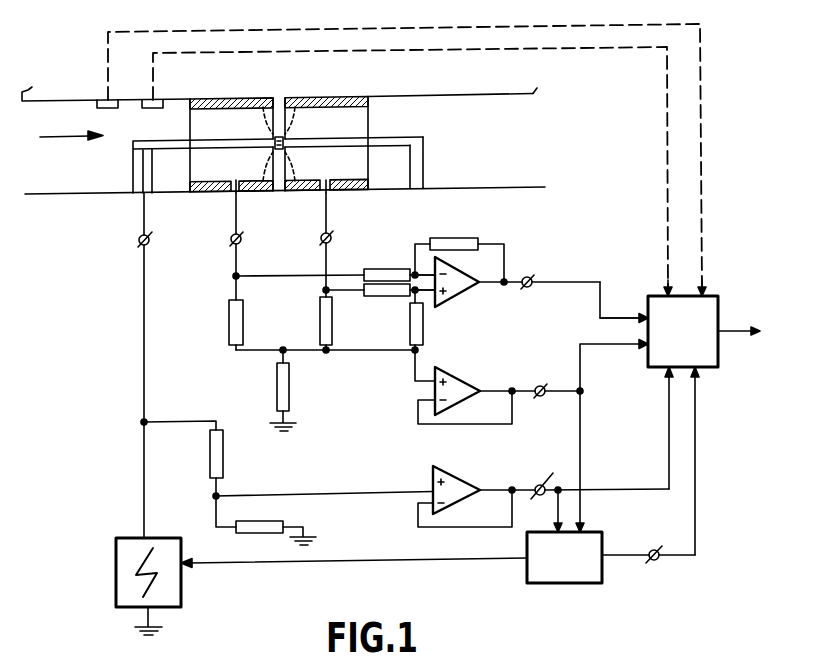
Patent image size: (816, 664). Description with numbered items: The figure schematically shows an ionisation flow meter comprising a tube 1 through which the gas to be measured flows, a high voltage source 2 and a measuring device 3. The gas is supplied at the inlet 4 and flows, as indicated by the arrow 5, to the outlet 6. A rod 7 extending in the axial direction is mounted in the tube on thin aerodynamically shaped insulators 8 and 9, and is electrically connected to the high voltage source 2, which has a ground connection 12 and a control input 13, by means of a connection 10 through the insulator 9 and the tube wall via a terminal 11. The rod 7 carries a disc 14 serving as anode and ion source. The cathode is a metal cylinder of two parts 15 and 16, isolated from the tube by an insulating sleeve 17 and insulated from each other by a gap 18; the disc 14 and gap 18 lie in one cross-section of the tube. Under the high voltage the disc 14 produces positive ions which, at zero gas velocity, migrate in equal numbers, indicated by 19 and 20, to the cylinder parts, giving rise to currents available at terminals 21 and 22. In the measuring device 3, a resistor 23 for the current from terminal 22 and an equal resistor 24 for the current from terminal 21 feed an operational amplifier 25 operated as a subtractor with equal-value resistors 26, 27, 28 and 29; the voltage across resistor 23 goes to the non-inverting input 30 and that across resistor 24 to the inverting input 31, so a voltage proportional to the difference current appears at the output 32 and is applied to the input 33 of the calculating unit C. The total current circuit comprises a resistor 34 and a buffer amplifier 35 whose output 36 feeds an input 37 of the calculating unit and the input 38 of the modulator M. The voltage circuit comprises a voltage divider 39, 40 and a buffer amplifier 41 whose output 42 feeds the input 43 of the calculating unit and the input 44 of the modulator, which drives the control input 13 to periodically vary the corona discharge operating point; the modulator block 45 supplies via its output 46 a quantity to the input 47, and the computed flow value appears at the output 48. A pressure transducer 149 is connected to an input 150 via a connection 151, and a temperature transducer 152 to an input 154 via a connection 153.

The tube 1 is at (467, 91).
The high voltage source 2 is at (117, 538).
The measuring device 3 is at (518, 331).
The inlet 4 is at (106, 85).
The arrow 5 is at (74, 135).
The outlet 6 is at (537, 88).
The rod 7 is at (383, 140).
The insulator 8 is at (421, 161).
The insulator 9 is at (133, 167).
The connection 10 is at (144, 194).
The terminal 11 is at (148, 244).
The ground connection 12 is at (162, 627).
The control input 13 is at (197, 564).
The disc 14 is at (290, 137).
The cylinder part 15 is at (212, 180).
The cylinder part 16 is at (338, 180).
The insulating sleeve 17 is at (347, 96).
The gap 18 is at (277, 104).
The ion migration 19 is at (273, 152).
The ion migration 20 is at (285, 152).
The terminal 21 is at (241, 240).
The terminal 22 is at (332, 239).
The resistor 23 is at (334, 318).
The resistor 24 is at (245, 318).
The operational amplifier 25 is at (456, 292).
The resistor 26 is at (425, 323).
The resistor 27 is at (392, 292).
The resistor 28 is at (388, 276).
The resistor 29 is at (458, 238).
The non-inverting input 30 is at (447, 281).
The inverting input 31 is at (446, 269).
The output 32 is at (533, 294).
The input 33 is at (628, 316).
The resistor 34 is at (290, 397).
The buffer amplifier 35 is at (453, 382).
The output 36 is at (543, 394).
The input 37 is at (627, 345).
The input 38 is at (582, 514).
The voltage divider resistor 39 is at (225, 458).
The voltage divider resistor 40 is at (264, 526).
The buffer amplifier 41 is at (457, 487).
The output 42 is at (574, 476).
The input 43 is at (667, 382).
The input 44 is at (558, 525).
The multiplier 45 is at (526, 562).
The output 46 is at (653, 549).
The input 47 is at (698, 382).
The output 48 is at (733, 329).
The pressure transducer 149 is at (106, 100).
The input 150 is at (703, 292).
The connection 151 is at (703, 143).
The temperature transducer 152 is at (160, 100).
The connection 153 is at (668, 143).
The input 154 is at (667, 288).